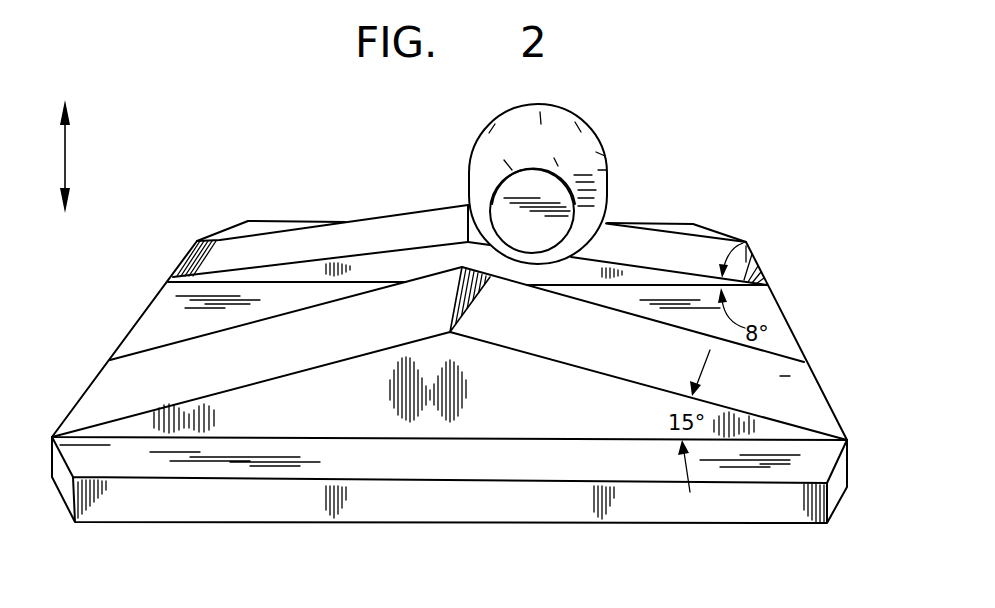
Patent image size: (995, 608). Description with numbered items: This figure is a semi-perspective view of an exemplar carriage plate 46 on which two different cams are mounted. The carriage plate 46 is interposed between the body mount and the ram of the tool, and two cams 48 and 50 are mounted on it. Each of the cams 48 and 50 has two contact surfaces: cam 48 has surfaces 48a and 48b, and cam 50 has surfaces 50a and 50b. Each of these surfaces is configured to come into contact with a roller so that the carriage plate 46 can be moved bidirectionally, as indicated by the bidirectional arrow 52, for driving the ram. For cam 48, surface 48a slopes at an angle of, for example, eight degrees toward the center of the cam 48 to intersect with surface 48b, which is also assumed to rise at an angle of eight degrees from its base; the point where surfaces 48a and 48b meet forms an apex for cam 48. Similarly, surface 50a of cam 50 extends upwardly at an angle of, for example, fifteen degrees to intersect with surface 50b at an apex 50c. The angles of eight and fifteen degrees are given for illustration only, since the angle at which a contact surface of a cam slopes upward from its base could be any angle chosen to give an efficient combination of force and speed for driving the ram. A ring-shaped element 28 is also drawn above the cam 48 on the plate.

The ring / collar 28 is at (582, 133).
The carriage plate 46 is at (230, 512).
The cam 48 is at (423, 229).
The contact surface 48a is at (693, 247).
The contact surface 48b is at (193, 252).
The cam 50 is at (612, 377).
The contact surface 50a is at (796, 378).
The contact surface 50b is at (137, 388).
The apex 50c is at (437, 273).
The bidirectional arrow 52 is at (65, 160).